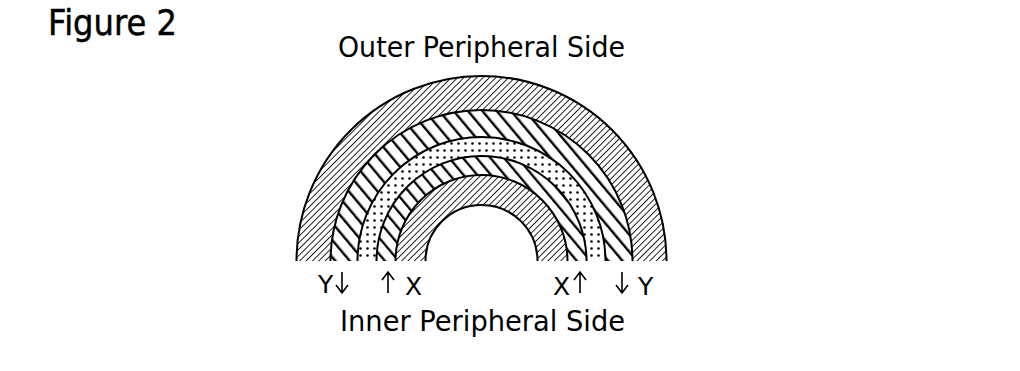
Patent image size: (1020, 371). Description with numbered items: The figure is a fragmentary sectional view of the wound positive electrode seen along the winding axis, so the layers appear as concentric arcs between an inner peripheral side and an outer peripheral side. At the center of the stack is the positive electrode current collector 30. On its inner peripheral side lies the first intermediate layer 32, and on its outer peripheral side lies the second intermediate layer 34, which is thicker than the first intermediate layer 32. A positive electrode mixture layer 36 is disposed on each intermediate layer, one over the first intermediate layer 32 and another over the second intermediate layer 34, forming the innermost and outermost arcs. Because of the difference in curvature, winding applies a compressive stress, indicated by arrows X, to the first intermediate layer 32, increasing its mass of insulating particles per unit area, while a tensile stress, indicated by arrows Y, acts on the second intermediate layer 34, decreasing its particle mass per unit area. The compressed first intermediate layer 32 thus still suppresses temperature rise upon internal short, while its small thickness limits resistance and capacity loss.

The positive electrode current collector 30 is at (604, 177).
The first intermediate layer 32 is at (598, 122).
The second intermediate layer 34 is at (590, 225).
The positive electrode mixture layer 36 is at (665, 221).